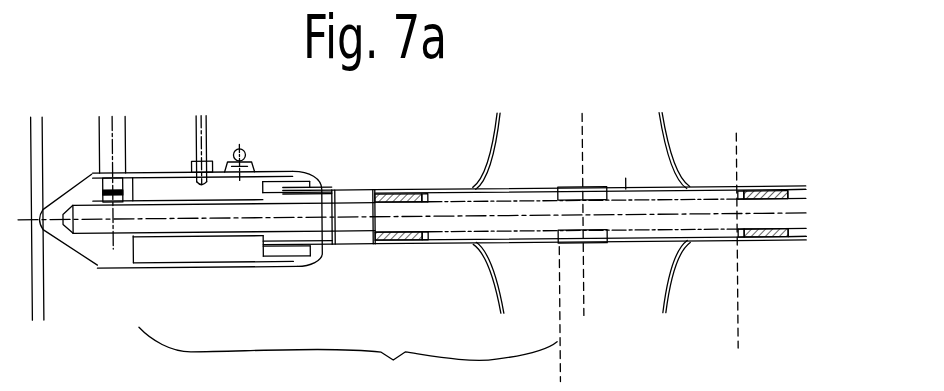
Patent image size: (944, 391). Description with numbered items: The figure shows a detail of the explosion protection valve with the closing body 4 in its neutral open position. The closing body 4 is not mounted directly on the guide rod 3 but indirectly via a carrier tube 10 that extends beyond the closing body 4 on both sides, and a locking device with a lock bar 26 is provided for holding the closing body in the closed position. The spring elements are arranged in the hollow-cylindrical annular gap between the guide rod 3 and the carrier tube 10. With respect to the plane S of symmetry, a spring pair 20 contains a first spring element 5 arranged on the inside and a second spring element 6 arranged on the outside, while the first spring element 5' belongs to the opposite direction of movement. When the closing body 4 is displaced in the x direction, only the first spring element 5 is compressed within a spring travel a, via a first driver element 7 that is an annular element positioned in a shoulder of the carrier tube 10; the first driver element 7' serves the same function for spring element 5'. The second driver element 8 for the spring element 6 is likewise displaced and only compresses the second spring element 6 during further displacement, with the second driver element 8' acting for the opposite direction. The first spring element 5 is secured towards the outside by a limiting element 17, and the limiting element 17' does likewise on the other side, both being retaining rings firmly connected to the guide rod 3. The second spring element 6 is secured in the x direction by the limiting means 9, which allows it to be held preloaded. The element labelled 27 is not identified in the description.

The guide rod 3 is at (265, 212).
The closing body 4 is at (492, 141).
The first spring element 5 is at (505, 224).
The first spring element 5' is at (657, 225).
The second spring element 6 is at (218, 231).
The first driver element 7 is at (574, 145).
The first driver element 7' is at (599, 167).
The second driver element 8 is at (401, 185).
The second driver element 8' is at (769, 170).
The limiting means 9 is at (346, 189).
The carrier tube 10 is at (447, 186).
The limiting element 17 is at (362, 254).
The limiting element 17' is at (788, 257).
The spring pair 20 is at (348, 357).
The lock bar 26 is at (203, 119).
The support 27 is at (121, 116).
The plane of symmetry S is at (648, 234).